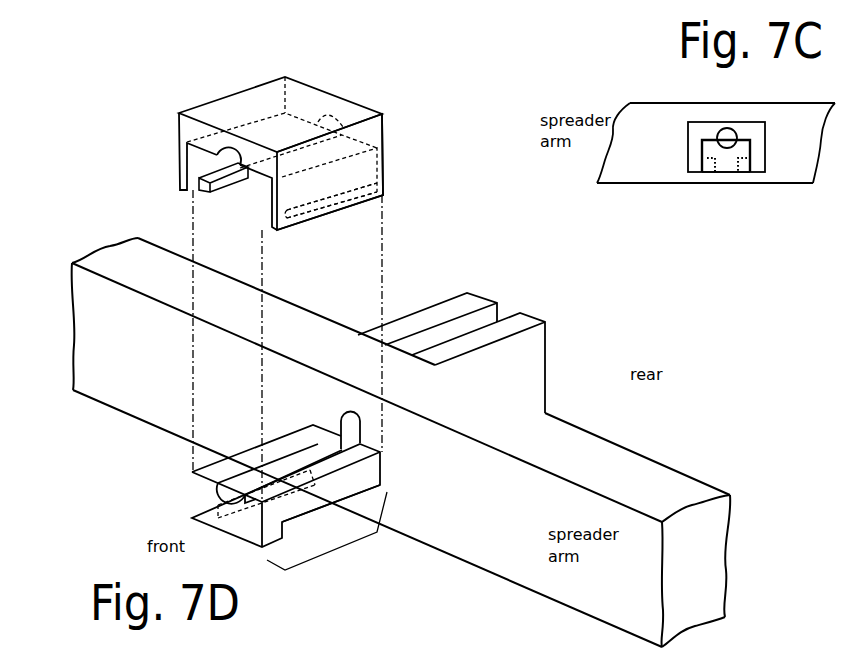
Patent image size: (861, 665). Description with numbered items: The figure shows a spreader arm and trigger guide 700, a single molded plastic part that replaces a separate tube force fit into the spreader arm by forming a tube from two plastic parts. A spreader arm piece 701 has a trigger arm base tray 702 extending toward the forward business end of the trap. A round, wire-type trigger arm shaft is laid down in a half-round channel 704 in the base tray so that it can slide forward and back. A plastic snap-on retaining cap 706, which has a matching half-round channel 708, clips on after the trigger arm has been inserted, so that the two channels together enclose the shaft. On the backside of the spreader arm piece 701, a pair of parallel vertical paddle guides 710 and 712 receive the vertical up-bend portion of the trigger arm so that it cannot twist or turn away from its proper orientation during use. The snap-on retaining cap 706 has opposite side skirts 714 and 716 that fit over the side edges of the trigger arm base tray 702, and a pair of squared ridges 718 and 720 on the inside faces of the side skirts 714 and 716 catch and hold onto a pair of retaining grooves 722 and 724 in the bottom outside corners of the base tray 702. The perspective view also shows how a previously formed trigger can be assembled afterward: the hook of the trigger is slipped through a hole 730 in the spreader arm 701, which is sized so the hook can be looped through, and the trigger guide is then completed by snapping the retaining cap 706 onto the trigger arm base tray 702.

In FIG. 7C, the spreader arm and trigger guide 700 is at (640, 66).
In FIG. 7D, the spreader arm and trigger guide 700 is at (557, 272).
In FIG. 7C, the spreader arm piece 701 is at (661, 133).
In FIG. 7D, the spreader arm piece 701 is at (500, 505).
In FIG. 7D, the trigger arm base tray 702 is at (360, 548).
In FIG. 7C, the half-round channel 704 is at (727, 148).
In FIG. 7D, the half-round channel 704 is at (318, 455).
In FIG. 7C, the snap-on retaining cap 706 is at (700, 123).
In FIG. 7D, the snap-on retaining cap 706 is at (226, 76).
In FIG. 7C, the half-round channel 708 is at (736, 133).
In FIG. 7D, the half-round channel 708 is at (332, 115).
In FIG. 7D, the paddle guide 710 is at (448, 305).
In FIG. 7D, the paddle guide 712 is at (535, 342).
In FIG. 7C, the side skirt 714 is at (690, 162).
In FIG. 7D, the side skirt 714 is at (175, 180).
In FIG. 7C, the side skirt 716 is at (762, 160).
In FIG. 7D, the side skirt 716 is at (383, 157).
In FIG. 7C, the squared ridge 718 is at (708, 168).
In FIG. 7D, the squared ridge 718 is at (230, 182).
In FIG. 7C, the squared ridge 720 is at (745, 168).
In FIG. 7D, the squared ridge 720 is at (328, 197).
In FIG. 7C, the retaining groove 722 is at (686, 208).
In FIG. 7D, the retaining groove 722 is at (222, 508).
In FIG. 7C, the retaining groove 724 is at (773, 207).
In FIG. 7D, the retaining groove 724 is at (300, 517).
In FIG. 7D, the hole 730 is at (366, 438).